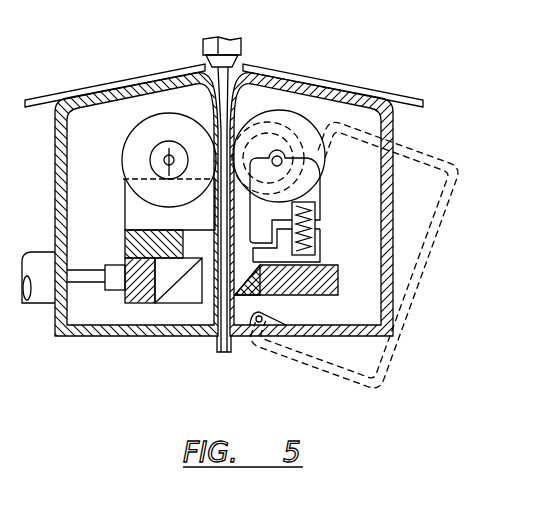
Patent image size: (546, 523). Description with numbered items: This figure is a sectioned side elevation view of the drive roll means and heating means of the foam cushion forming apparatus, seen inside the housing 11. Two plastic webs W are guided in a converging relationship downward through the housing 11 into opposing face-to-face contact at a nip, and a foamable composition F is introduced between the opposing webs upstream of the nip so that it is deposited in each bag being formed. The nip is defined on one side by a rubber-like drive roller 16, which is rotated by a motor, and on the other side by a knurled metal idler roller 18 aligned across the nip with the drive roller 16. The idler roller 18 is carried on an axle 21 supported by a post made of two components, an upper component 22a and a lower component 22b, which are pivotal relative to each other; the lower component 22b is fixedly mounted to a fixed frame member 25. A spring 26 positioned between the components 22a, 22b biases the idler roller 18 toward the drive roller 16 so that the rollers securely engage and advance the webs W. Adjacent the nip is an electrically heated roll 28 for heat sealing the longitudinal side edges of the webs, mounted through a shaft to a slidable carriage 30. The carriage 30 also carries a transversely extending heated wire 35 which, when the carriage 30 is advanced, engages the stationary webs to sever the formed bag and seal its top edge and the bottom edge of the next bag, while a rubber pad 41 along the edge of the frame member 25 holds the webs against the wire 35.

The housing 11 is at (63, 338).
The plastic web W is at (97, 85).
The foamable composition F is at (232, 82).
The drive roller 16 is at (130, 133).
The idler roller 18 is at (325, 143).
The axle 21 is at (284, 157).
The upper post component 22a is at (306, 188).
The lower post component 22b is at (320, 262).
The fixed frame member 25 is at (305, 294).
The spring 26 is at (320, 248).
The heated roll 28 is at (392, 135).
The carriage 30 is at (135, 302).
The heated wire 35 is at (183, 282).
The rubber pad 41 is at (230, 338).